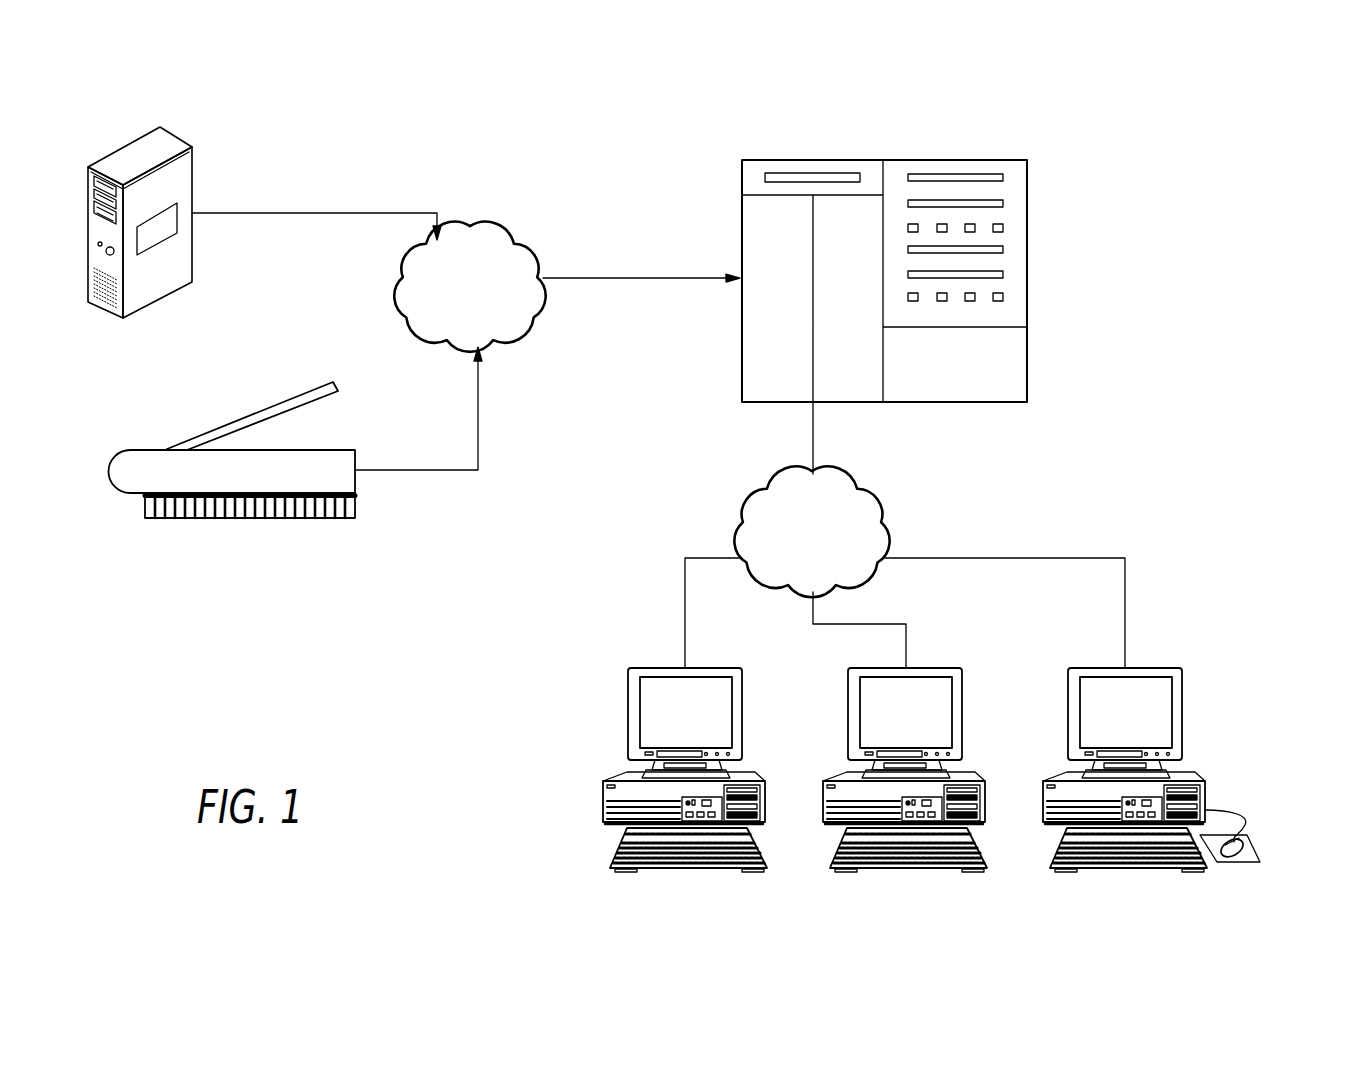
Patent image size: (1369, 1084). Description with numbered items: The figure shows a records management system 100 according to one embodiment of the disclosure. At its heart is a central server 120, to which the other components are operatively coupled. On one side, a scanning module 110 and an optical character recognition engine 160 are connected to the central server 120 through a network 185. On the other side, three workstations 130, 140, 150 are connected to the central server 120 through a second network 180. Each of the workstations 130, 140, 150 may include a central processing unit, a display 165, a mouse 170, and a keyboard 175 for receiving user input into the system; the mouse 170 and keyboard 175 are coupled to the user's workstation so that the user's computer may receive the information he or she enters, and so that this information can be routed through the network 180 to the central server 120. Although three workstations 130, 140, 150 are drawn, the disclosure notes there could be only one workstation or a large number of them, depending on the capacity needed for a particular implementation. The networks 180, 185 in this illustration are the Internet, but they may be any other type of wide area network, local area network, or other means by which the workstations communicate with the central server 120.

The records management system 100 is at (1175, 257).
The scanning module 110 is at (148, 448).
The central server 120 is at (1028, 244).
The workstation 130 is at (655, 667).
The workstation 140 is at (884, 667).
The workstation 150 is at (1104, 667).
The optical character recognition engine 160 is at (140, 147).
The display 165 is at (1158, 711).
The mouse 170 is at (1242, 843).
The keyboard 175 is at (1090, 864).
The network 180 is at (746, 511).
The network 185 is at (488, 228).